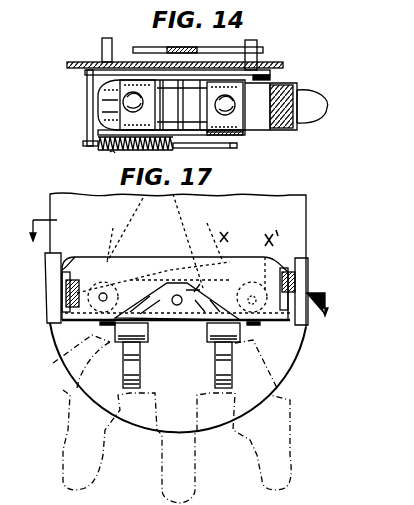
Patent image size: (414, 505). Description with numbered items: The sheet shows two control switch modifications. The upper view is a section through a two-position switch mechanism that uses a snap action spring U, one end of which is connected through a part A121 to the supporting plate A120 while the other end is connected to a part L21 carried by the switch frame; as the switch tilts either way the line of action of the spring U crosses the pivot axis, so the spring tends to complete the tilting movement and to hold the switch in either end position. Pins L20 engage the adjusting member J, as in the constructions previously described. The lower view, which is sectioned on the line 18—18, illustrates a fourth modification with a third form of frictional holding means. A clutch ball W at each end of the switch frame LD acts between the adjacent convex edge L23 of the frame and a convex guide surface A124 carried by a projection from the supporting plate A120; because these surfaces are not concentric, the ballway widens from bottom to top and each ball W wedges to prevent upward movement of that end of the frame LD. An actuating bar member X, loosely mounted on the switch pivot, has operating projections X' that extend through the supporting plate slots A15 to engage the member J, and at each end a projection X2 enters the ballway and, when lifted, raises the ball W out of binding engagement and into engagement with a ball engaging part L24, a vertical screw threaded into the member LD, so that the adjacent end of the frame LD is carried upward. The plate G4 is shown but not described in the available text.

In FIG. 14, the pins L20 is at (297, 55).
In FIG. 14, the member J is at (257, 42).
In FIG. 14, the part A121 is at (87, 122).
In FIG. 14, the part L21 is at (237, 148).
In FIG. 14, the snap action spring U is at (113, 150).
In FIG. 17, the supporting plate A120 is at (306, 215).
In FIG. 17, the clutch ball W is at (48, 277).
In FIG. 17, the section line 18- 18 is at (181, 265).
In FIG. 17, the convex guide surface A124 is at (306, 240).
In FIG. 17, the projection X2 is at (62, 297).
In FIG. 17, the switch frame LD is at (205, 260).
In FIG. 17, the actuating bar member X is at (224, 237).
In FIG. 17, the operating projections X' is at (155, 303).
In FIG. 17, the triangular guide plate G4 is at (167, 323).
In FIG. 17, the convex edge L23 is at (297, 322).
In FIG. 17, the ball engaging part L24 is at (70, 260).
In FIG. 17, the supporting plate slots A15 is at (119, 235).